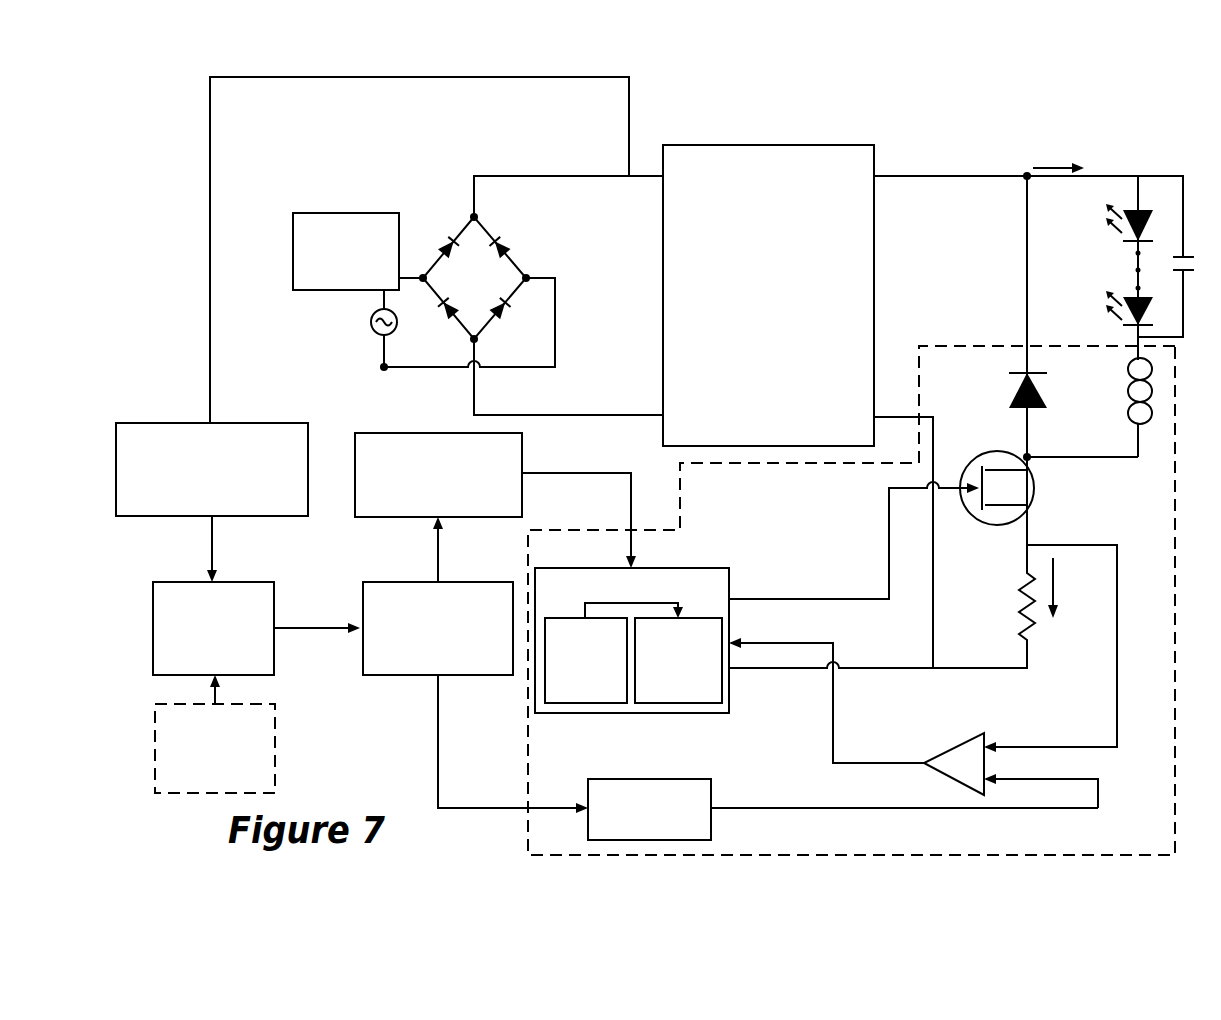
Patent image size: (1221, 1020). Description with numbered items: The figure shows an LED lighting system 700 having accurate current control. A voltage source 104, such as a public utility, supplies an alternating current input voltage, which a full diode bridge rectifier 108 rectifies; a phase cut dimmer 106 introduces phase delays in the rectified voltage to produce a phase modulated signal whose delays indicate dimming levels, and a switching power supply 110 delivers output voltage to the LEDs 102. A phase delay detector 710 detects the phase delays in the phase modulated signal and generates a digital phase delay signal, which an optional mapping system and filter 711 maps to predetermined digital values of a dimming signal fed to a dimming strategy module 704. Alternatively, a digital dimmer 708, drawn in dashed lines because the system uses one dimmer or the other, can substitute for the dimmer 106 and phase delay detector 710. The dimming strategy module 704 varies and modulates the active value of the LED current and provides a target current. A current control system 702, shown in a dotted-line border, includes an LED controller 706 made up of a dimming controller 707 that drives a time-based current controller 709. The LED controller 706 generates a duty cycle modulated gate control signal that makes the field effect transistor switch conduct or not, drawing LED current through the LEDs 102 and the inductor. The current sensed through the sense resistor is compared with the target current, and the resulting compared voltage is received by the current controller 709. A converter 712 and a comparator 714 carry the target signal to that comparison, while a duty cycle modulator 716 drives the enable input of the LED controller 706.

The LED lighting system 700 is at (948, 158).
The LEDs 102 is at (1106, 259).
The voltage source 104 is at (372, 340).
The dimmer 106 is at (330, 213).
The full diode bridge rectifier 108 is at (458, 289).
The switching power supply 110 is at (805, 145).
The current control system 702 is at (935, 346).
The dimming strategy module 704 is at (400, 582).
The LED controller 706 is at (632, 640).
The dimming controller 707 is at (586, 660).
The digital dimmer 708 is at (276, 742).
The current controller 709 is at (678, 660).
The phase delay detector 710 is at (216, 423).
The mapping system and filter 711 is at (258, 582).
The digital-to-analog converter (DAC) 712 is at (619, 779).
The comparator/amplifier 714 is at (936, 753).
The duty cycle modulator 716 is at (382, 433).